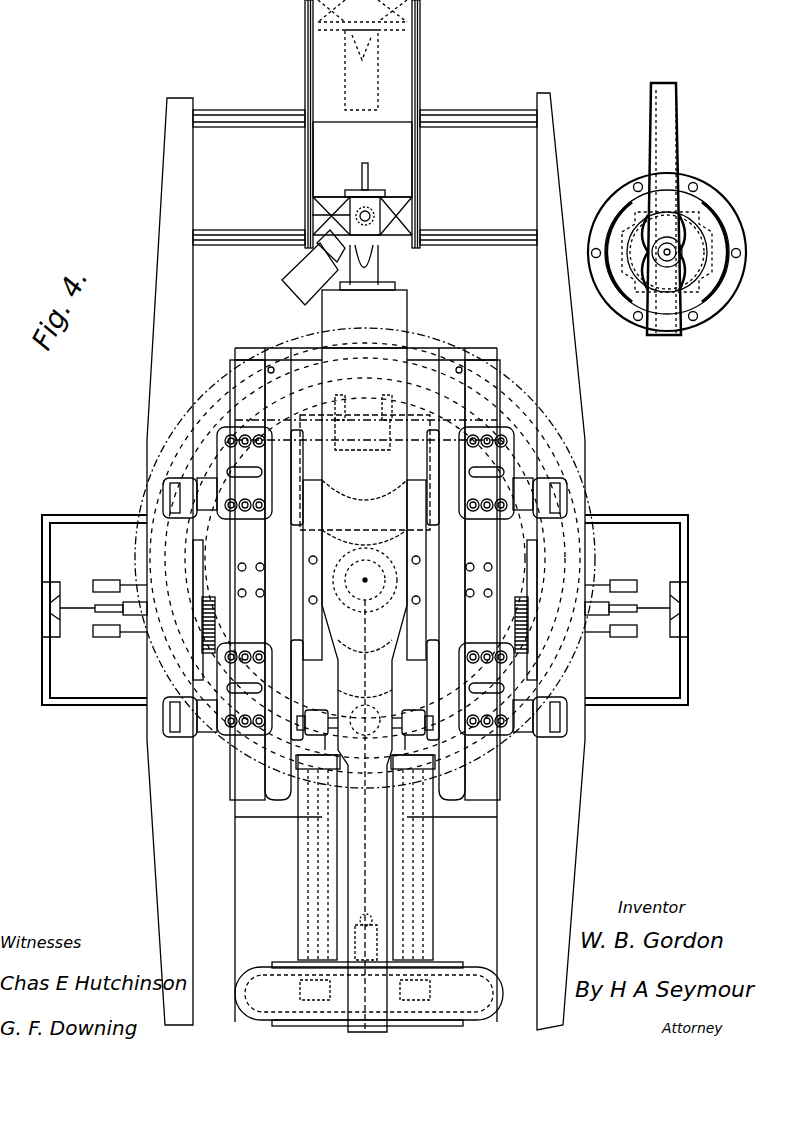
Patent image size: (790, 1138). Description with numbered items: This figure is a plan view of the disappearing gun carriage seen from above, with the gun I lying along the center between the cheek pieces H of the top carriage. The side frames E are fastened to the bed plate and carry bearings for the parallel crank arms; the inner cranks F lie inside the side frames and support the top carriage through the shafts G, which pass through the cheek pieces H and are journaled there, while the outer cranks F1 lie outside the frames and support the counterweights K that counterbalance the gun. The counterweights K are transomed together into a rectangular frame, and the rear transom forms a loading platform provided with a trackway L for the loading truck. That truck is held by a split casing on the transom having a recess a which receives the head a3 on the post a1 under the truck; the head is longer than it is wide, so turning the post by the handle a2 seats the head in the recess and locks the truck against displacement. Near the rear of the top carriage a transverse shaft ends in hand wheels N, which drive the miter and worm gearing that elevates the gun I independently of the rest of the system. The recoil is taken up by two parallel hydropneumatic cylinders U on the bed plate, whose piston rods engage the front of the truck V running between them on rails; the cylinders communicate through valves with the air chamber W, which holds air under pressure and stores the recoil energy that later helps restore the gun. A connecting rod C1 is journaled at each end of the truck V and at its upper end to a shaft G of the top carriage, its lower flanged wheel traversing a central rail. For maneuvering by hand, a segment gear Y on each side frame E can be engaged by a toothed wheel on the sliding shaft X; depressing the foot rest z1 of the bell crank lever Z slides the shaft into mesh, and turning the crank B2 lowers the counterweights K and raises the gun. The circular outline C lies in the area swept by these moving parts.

The counterweights K is at (366, 561).
The trackway L is at (307, 148).
The recess a is at (358, 205).
The handle a2 is at (368, 175).
The head a3 is at (345, 222).
The post a1 is at (380, 245).
The side frames E is at (445, 348).
The hand wheels N is at (291, 410).
The shafts G is at (350, 415).
The gun I is at (365, 690).
The turntable circle C is at (345, 560).
The inner cranks F is at (356, 581).
The outer cranks F1 is at (535, 445).
The cheek pieces H is at (303, 560).
The truck V is at (410, 522).
The sliding shaft X is at (365, 610).
The segment gear Y is at (202, 625).
The bell crank lever Z is at (365, 610).
The crank B2 is at (135, 602).
The foot rest z1 is at (108, 580).
The hydropneumatic cylinders U is at (302, 912).
The air chamber W is at (369, 994).
The connecting rod C1 is at (365, 958).